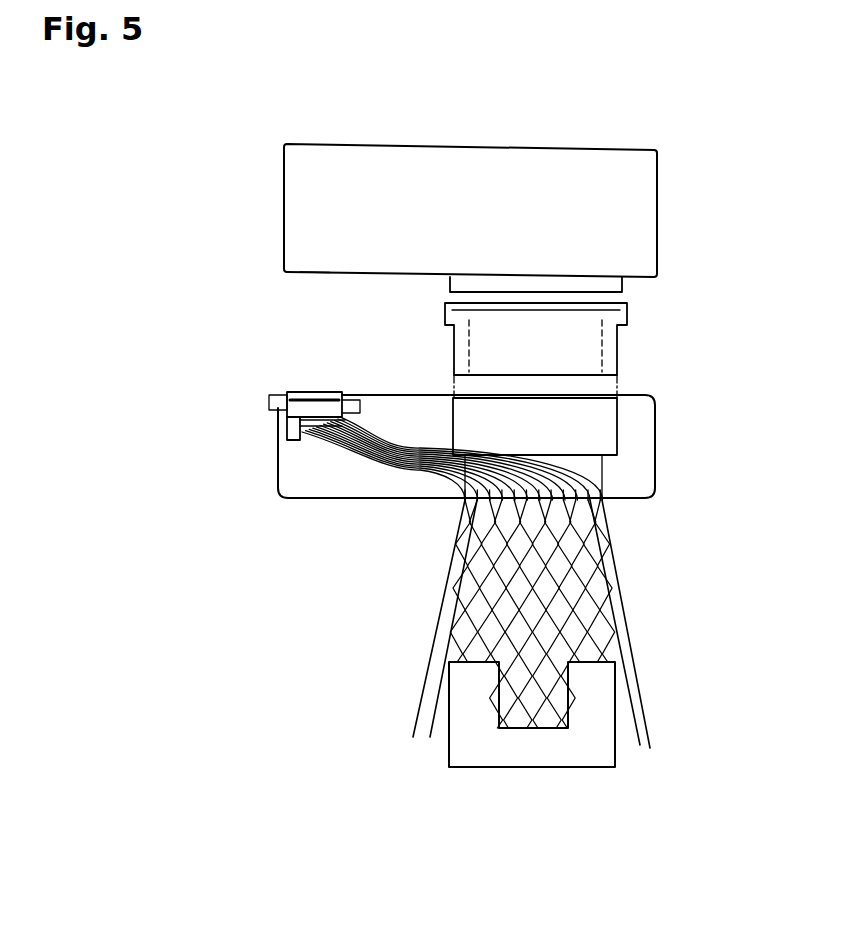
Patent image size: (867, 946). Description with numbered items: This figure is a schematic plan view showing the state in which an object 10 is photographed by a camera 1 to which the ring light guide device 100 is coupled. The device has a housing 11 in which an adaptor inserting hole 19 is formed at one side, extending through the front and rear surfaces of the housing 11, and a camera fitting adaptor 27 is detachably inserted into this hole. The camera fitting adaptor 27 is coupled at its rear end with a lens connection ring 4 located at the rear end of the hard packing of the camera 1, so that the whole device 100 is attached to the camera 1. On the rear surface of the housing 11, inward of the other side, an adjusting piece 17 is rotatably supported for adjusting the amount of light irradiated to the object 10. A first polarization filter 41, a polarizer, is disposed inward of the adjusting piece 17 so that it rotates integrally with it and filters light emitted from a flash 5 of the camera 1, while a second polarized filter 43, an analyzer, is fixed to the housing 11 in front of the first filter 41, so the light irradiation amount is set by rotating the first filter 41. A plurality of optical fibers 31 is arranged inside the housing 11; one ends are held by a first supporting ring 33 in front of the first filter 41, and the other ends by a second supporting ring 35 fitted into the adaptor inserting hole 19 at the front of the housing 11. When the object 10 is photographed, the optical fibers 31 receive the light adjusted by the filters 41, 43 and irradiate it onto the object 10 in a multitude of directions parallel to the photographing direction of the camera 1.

The camera 1 is at (283, 146).
The lens connection ring 4 is at (625, 290).
The flash 5 is at (312, 273).
The object 10 is at (447, 766).
The housing 11 is at (388, 498).
The adjusting piece 17 is at (276, 400).
The adaptor inserting hole 19 is at (598, 440).
The camera fitting adaptor 27 is at (622, 350).
The optical fibers 31 is at (337, 458).
The first supporting ring 33 is at (347, 423).
The second supporting ring 35 is at (620, 490).
The first polarization filter 41 is at (324, 400).
The second polarized filter 43 is at (282, 412).
The ring light guide device 100 is at (448, 438).